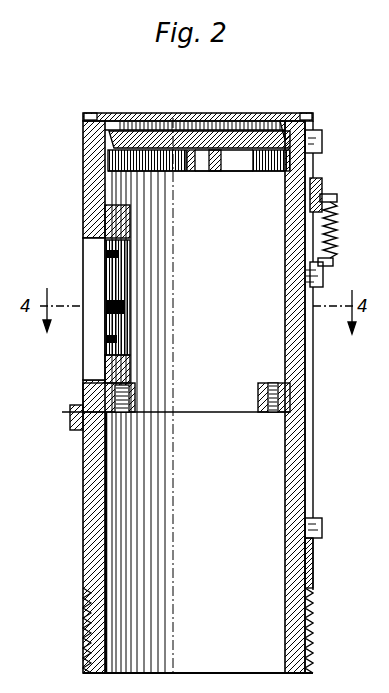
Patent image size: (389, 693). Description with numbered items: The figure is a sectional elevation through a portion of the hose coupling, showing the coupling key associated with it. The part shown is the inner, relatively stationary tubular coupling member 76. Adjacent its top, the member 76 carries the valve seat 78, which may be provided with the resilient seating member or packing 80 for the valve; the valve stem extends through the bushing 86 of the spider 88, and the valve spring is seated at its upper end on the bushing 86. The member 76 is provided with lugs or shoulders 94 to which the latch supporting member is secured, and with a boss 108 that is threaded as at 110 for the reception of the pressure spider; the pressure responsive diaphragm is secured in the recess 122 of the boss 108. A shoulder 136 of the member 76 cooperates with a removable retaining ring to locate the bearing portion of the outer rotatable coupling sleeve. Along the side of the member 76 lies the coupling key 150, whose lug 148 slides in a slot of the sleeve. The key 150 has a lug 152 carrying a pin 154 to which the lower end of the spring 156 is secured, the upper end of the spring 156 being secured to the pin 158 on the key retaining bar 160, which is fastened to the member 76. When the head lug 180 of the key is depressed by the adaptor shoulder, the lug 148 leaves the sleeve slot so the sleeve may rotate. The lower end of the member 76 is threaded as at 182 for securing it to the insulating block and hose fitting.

The inner tubular coupling member 76 is at (84, 514).
The valve seat 78 is at (284, 118).
The resilient seating member 80 is at (113, 114).
The bushing 86 is at (195, 171).
The spider 88 is at (244, 171).
The lugs or shoulders 94 is at (138, 413).
The boss 108 is at (130, 243).
The threads 110 is at (130, 337).
The recess 122 is at (86, 240).
The shoulder 136 is at (70, 415).
The lug 148 is at (323, 529).
The coupling key 150 is at (314, 466).
The lug 152 is at (324, 276).
The pin 154 is at (334, 262).
The spring 156 is at (340, 220).
The pin 158 is at (335, 198).
The key retaining bar 160 is at (318, 180).
The head lug 180 is at (323, 138).
The threads 182 is at (310, 646).